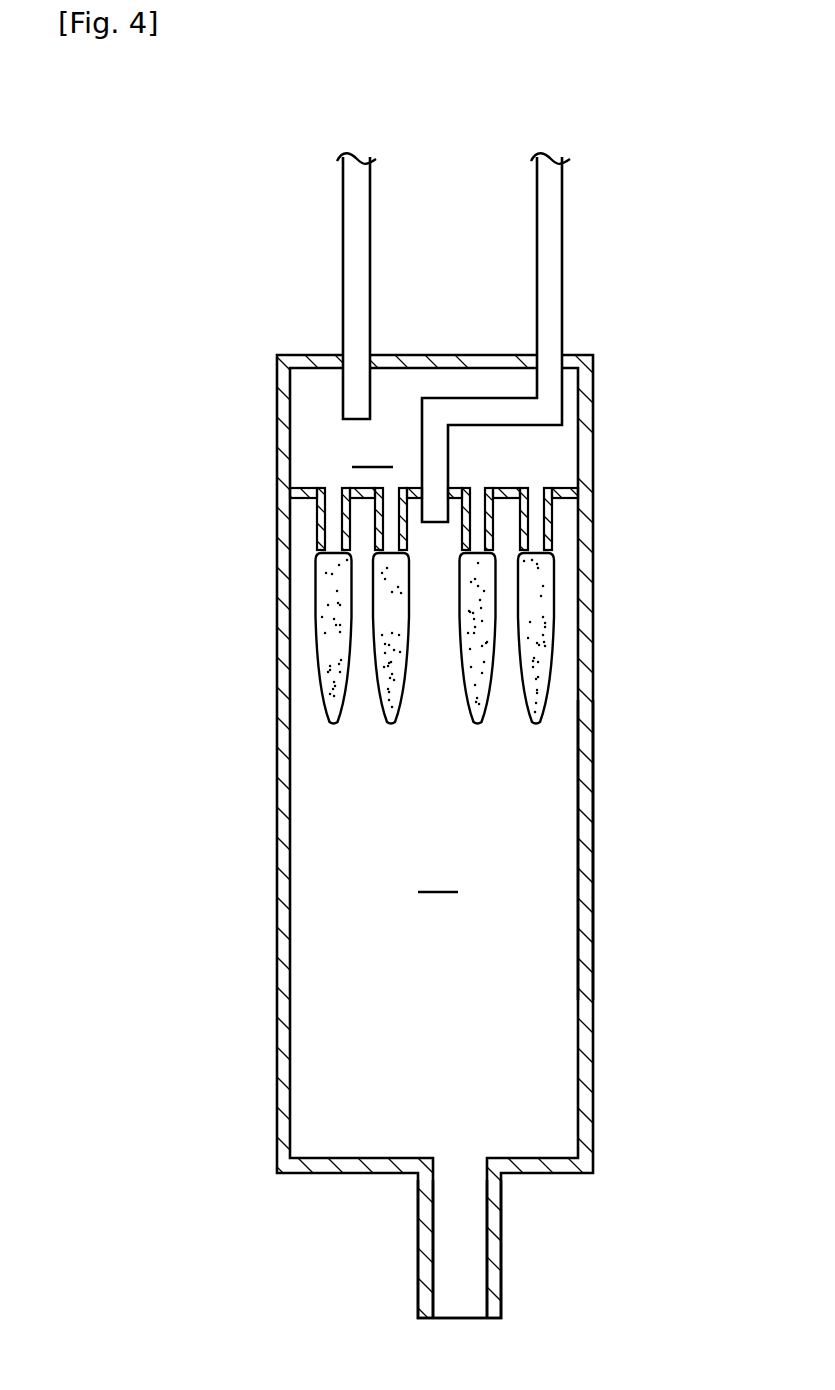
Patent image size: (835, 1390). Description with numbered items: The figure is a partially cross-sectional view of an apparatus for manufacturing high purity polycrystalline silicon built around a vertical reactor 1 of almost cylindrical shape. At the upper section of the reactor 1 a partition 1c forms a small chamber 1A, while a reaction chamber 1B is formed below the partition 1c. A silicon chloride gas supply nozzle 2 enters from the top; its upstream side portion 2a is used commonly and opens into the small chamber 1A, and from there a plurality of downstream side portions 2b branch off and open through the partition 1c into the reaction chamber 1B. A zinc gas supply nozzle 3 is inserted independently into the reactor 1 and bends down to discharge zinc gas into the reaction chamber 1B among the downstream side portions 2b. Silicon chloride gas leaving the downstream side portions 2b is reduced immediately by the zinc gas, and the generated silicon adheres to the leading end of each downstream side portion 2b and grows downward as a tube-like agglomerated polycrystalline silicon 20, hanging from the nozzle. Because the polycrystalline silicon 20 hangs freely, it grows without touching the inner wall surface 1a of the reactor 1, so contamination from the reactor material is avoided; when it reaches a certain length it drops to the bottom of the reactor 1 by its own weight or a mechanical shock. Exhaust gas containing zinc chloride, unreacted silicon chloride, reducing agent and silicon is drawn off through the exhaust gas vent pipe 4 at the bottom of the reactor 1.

The reactor 1 is at (585, 748).
The inner wall surface 1a is at (572, 873).
The partition 1c is at (505, 488).
The small chamber 1A is at (372, 452).
The reaction chamber 1B is at (438, 875).
The silicon chloride gas supply nozzle 2 is at (343, 273).
The upstream side portion 2a is at (288, 286).
The downstream side portions 2b is at (345, 530).
The zinc gas supply nozzle 3 is at (562, 268).
The exhaust gas vent pipe 4 is at (500, 1237).
The polycrystalline silicon 20 is at (318, 640).